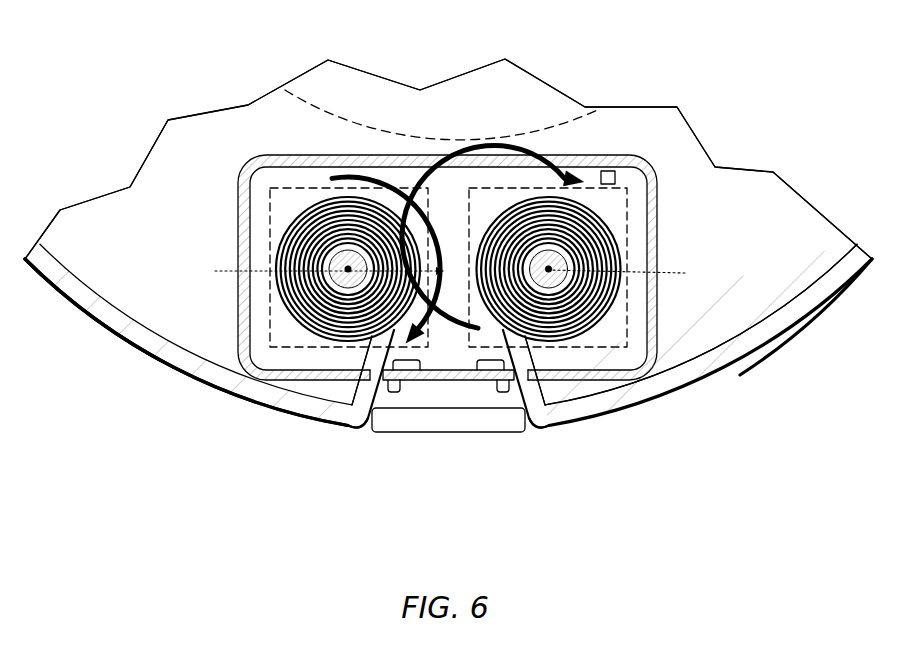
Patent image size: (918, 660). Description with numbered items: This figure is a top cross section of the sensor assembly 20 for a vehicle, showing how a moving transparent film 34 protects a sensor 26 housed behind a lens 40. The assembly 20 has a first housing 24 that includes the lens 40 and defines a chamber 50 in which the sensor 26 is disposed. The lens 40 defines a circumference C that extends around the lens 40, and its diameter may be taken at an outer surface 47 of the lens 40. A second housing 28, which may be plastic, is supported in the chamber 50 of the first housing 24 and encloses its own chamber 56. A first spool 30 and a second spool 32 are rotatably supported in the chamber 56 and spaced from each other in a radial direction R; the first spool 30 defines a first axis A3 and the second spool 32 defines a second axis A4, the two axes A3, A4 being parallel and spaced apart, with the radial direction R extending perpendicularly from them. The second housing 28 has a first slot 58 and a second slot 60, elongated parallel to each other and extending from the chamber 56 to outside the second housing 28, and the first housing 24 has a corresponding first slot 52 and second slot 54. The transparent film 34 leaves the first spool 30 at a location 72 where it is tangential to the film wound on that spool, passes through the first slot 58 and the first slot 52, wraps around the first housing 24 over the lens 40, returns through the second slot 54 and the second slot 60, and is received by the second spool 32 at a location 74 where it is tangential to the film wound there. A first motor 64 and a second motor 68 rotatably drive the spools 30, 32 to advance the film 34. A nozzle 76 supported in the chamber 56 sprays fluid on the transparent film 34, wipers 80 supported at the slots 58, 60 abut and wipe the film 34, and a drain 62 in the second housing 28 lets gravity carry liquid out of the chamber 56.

The assembly 20 is at (757, 110).
The first housing 24 is at (438, 437).
The sensor 26 is at (586, 130).
The second housing 28 is at (660, 253).
The first spool 30 is at (305, 237).
The second spool 32 is at (614, 228).
The transparent film 34 is at (305, 213).
The lens 40 is at (747, 340).
The outer surface 47 is at (823, 297).
The chamber 50 is at (755, 238).
The first slot 52 is at (365, 428).
The second slot 54 is at (535, 430).
The chamber 56 is at (633, 327).
The first slot 58 is at (392, 340).
The second slot 60 is at (545, 438).
The drain 62 is at (616, 176).
The first motor 64 is at (273, 393).
The second motor 68 is at (608, 352).
The location 72 is at (360, 380).
The location 74 is at (530, 365).
The nozzle 76 is at (480, 371).
The wipers 80 is at (392, 393).
The first axis A3 is at (312, 271).
The second axis A4 is at (632, 272).
The circumference C is at (110, 327).
The radial direction R is at (318, 425).